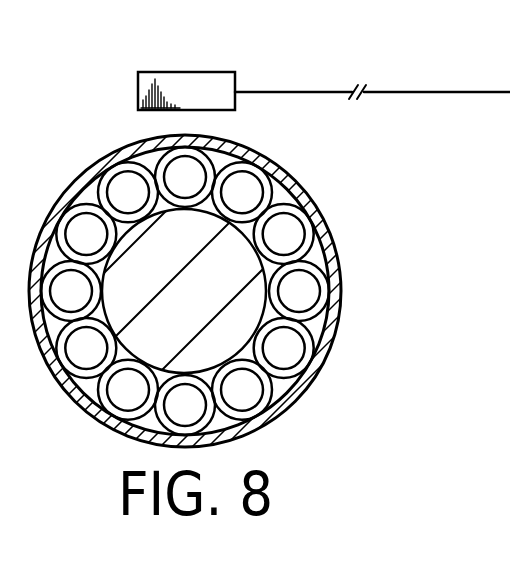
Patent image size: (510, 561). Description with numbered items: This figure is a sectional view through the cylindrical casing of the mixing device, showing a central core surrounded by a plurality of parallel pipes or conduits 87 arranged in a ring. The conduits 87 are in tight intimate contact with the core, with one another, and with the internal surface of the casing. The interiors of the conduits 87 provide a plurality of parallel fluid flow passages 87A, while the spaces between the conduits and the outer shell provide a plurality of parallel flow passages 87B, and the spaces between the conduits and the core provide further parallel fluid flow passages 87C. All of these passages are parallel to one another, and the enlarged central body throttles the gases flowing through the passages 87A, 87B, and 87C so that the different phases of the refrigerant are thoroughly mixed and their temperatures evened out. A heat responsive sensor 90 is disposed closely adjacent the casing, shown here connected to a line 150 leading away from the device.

The spectrum analyzer / signal display 90 is at (170, 72).
The signal line 150 is at (281, 92).
The roller / ball element 87 is at (250, 228).
The inner part of roller element 87A is at (300, 291).
The gap between roller elements (cage) 87B is at (272, 389).
The outer ring of bearing 87C is at (313, 224).